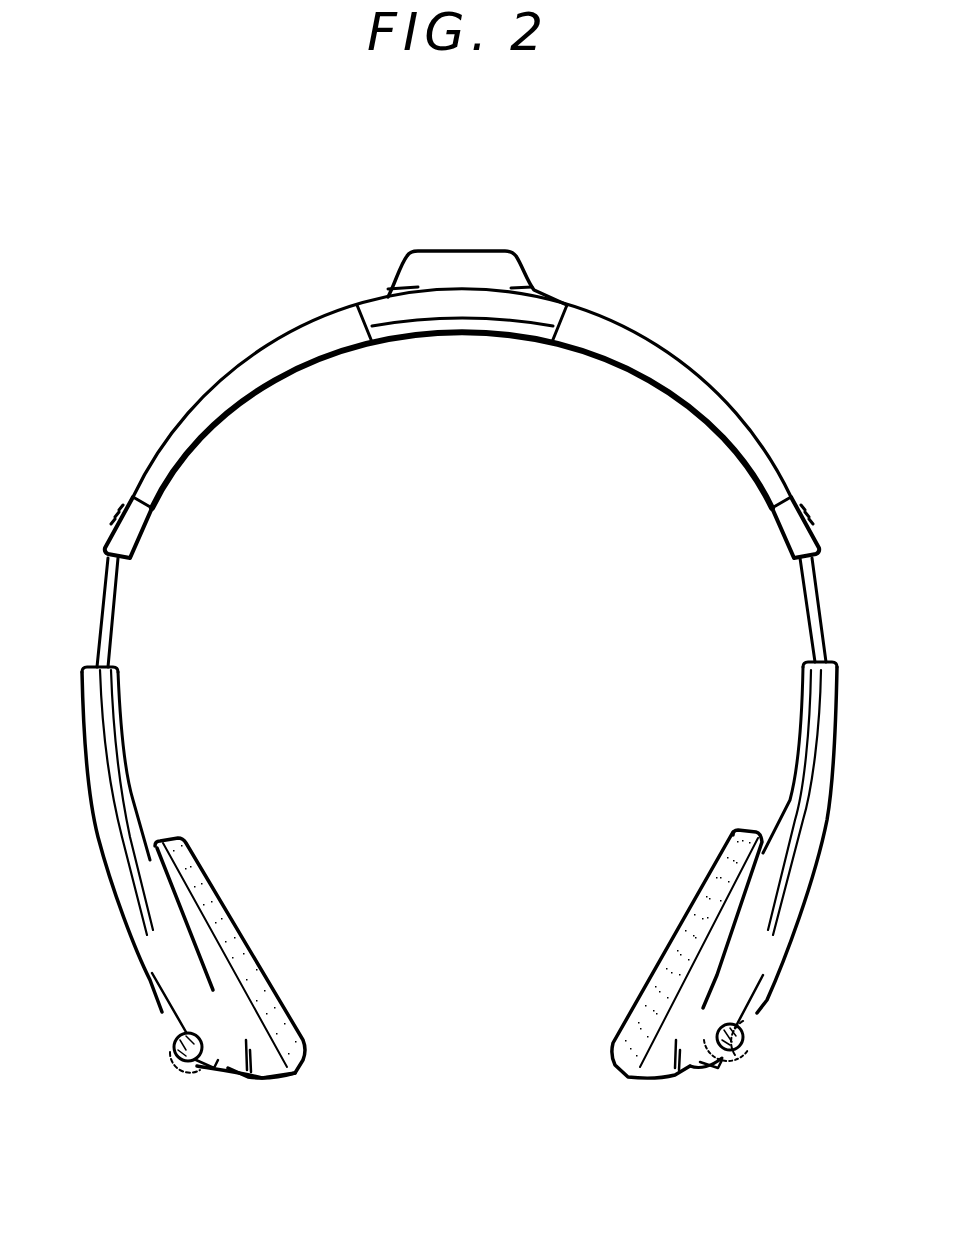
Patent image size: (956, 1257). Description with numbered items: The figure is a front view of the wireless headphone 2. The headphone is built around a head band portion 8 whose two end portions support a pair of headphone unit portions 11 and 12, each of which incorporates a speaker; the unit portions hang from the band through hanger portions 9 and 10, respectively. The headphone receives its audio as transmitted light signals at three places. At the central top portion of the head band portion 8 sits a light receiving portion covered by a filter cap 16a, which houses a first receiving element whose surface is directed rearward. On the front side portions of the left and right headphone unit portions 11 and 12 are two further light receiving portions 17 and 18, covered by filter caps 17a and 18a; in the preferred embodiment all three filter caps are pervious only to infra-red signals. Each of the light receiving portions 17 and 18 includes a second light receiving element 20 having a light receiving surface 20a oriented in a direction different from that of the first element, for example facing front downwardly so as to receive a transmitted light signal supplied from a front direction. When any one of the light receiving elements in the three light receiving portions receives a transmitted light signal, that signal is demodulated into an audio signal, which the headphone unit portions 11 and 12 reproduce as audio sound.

The wireless headphone 2 is at (464, 1105).
The head band portion 8 is at (253, 360).
The hanger portion 9 is at (807, 586).
The hanger portion 10 is at (110, 590).
The headphone unit portion 11 is at (680, 1010).
The headphone unit portion 12 is at (222, 1000).
The filter cap 16a is at (477, 263).
The light receiving portion 17 is at (719, 1068).
The filter cap 17a is at (753, 1033).
The light receiving portion 18 is at (189, 1074).
The filter cap 18a is at (173, 1041).
The second light receiving element 20 is at (173, 1057).
The light receiving surface 20a is at (735, 1052).